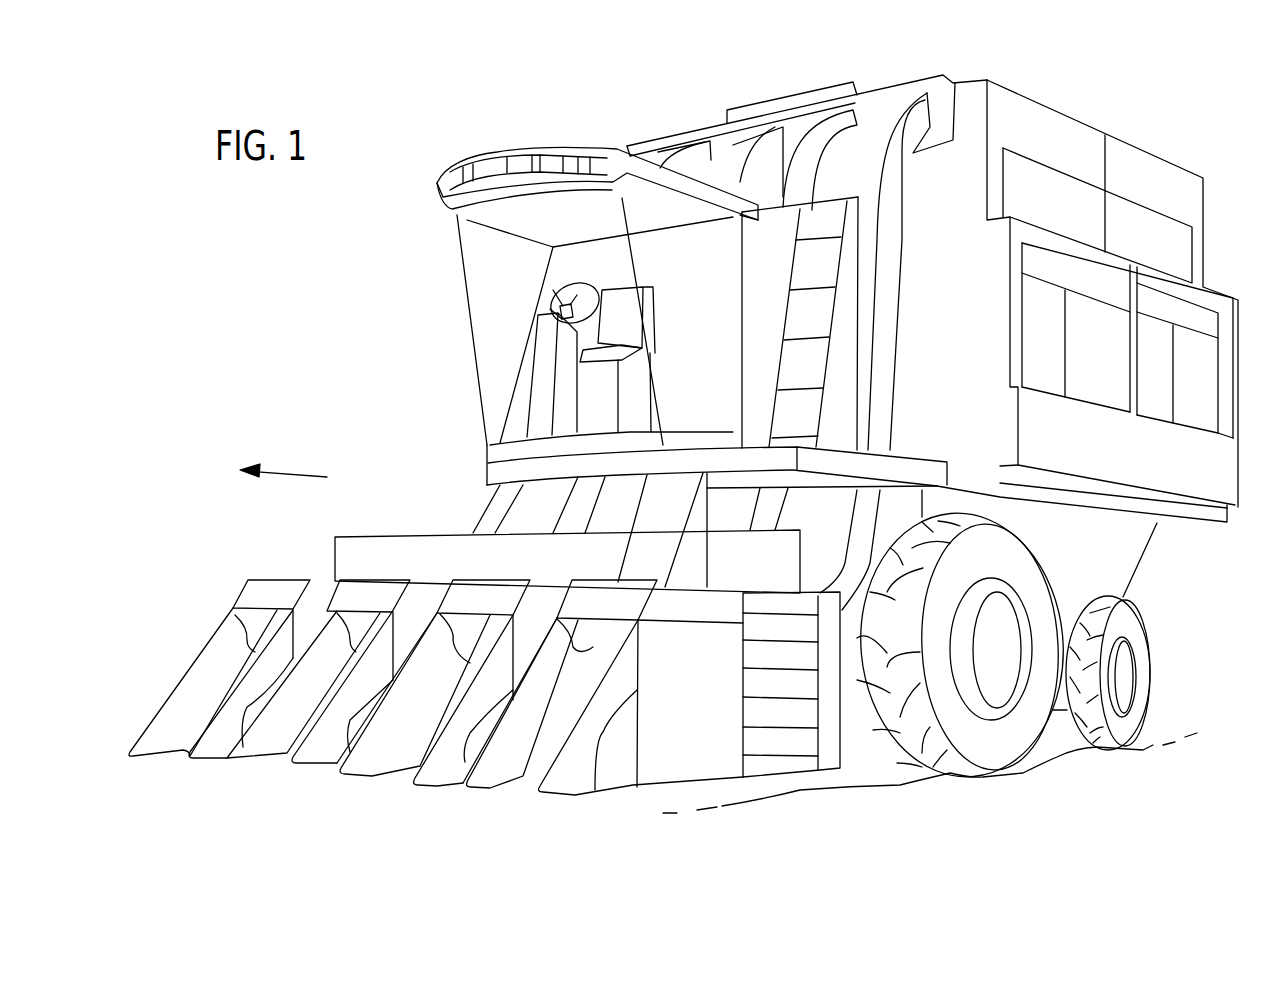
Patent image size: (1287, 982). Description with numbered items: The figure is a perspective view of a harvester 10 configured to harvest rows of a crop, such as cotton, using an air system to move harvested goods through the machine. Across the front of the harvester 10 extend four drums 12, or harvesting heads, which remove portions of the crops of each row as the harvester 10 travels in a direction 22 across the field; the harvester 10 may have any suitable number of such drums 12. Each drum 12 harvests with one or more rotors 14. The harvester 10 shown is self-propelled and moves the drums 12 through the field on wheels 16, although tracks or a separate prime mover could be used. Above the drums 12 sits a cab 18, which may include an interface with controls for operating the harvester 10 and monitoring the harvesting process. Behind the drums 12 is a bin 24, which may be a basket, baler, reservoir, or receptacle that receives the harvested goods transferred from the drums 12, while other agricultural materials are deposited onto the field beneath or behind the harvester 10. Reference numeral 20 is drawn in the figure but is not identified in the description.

The harvester 10 is at (1084, 110).
The drums 12 is at (373, 578).
The rotors 14 is at (513, 700).
The wheels 16 is at (1030, 735).
The cab 18 is at (520, 167).
The operator cab 20 is at (412, 113).
The direction 22 is at (290, 473).
The bin 24 is at (1205, 230).